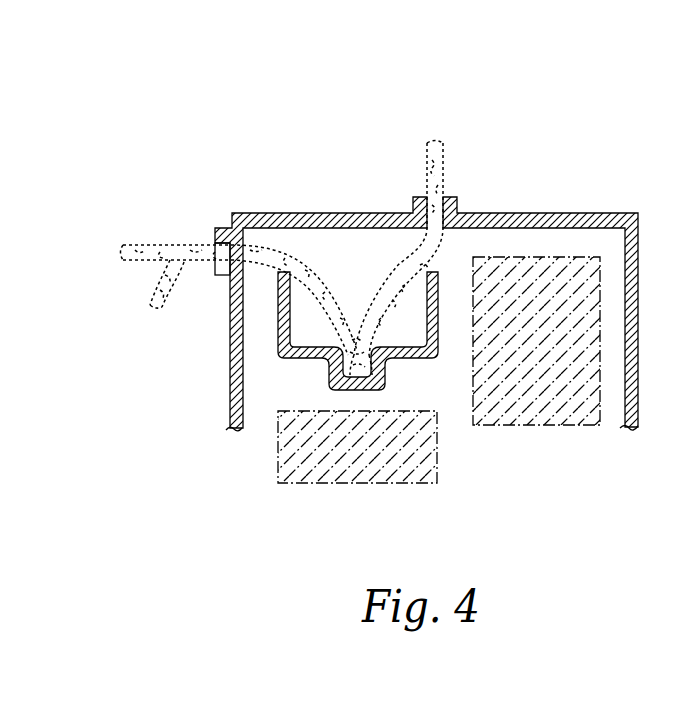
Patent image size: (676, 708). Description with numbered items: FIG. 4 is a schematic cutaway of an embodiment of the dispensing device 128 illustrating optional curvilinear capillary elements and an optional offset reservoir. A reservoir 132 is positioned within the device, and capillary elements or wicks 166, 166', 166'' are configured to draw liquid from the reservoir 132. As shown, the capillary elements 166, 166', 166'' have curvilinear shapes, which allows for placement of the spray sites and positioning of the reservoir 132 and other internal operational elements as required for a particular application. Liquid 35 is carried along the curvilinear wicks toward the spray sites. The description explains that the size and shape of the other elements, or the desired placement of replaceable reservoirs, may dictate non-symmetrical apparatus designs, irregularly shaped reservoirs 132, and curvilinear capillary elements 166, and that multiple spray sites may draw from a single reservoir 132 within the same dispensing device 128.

The dispensing assembly housing 128 is at (256, 95).
The reservoir 132 is at (278, 311).
The liquid stream 35 is at (433, 146).
The capillary element 166 is at (447, 261).
The capillary element 166' is at (221, 261).
The capillary element 166'' is at (116, 294).